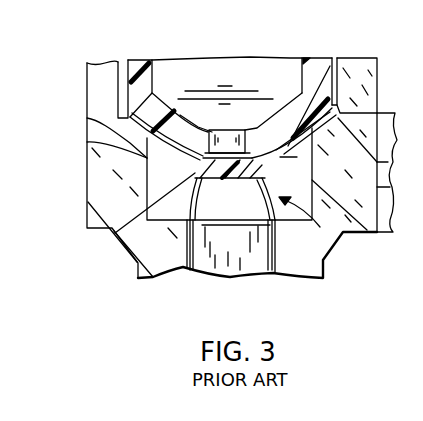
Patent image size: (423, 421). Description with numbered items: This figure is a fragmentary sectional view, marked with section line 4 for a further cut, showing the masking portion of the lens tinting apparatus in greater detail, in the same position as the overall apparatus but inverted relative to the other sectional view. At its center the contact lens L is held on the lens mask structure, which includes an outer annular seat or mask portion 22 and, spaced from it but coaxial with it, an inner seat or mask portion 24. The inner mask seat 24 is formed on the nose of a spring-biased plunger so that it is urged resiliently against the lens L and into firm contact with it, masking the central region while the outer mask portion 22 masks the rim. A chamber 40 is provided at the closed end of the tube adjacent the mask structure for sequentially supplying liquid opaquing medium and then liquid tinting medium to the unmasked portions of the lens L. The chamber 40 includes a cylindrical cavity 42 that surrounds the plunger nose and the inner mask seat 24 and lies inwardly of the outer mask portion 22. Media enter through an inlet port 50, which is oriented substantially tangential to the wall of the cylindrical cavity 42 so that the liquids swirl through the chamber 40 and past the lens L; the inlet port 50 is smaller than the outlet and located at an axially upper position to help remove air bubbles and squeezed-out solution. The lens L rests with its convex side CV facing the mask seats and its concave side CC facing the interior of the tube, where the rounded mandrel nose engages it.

The section line 4- 4 is at (225, 12).
The outer annular seat or mask portion 22 is at (128, 115).
The inner seat or mask portion 24 is at (141, 170).
The chamber 40 is at (279, 222).
The cylindrical cavity 42 is at (300, 187).
The inlet port 50 is at (388, 109).
The contact lens L is at (87, 118).
The convex side CV is at (87, 142).
The concave side CC is at (160, 102).